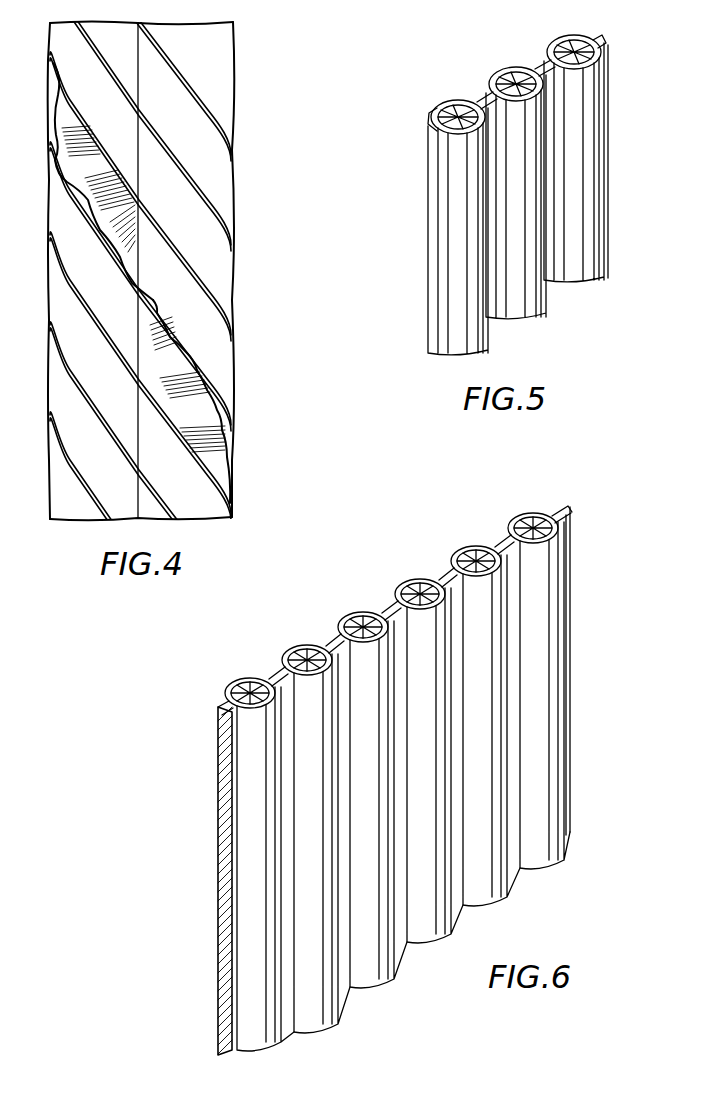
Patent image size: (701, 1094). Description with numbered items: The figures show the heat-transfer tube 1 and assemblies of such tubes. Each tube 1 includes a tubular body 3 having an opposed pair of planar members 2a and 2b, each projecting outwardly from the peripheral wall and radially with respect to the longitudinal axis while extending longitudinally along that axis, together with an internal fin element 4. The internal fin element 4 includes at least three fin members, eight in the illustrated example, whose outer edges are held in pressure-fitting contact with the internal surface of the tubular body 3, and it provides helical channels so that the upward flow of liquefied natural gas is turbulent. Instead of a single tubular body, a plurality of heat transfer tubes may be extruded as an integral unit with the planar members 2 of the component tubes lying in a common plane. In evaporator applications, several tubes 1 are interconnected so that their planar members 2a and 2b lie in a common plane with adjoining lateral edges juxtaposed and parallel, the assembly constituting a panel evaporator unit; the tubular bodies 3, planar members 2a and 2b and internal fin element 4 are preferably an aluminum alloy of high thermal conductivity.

In FIG. 5, the heat-transfer tube 1 is at (553, 308).
In FIG. 6, the heat-transfer tube 1 is at (318, 998).
In FIG. 5, the planar members 2 is at (484, 100).
In FIG. 6, the planar member 2a is at (224, 703).
In FIG. 6, the planar member 2b is at (278, 678).
In FIG. 5, the tubular body 3 is at (434, 106).
In FIG. 4, the internal fin element 4 is at (243, 339).
In FIG. 5, the internal fin element 4 is at (457, 112).
In FIG. 6, the internal fin element 4 is at (247, 690).